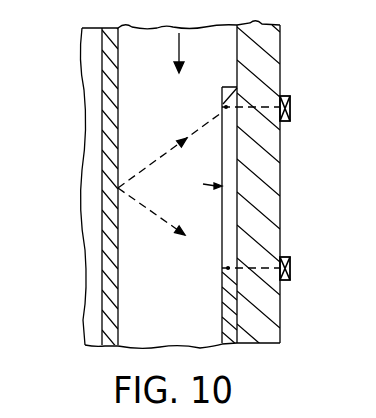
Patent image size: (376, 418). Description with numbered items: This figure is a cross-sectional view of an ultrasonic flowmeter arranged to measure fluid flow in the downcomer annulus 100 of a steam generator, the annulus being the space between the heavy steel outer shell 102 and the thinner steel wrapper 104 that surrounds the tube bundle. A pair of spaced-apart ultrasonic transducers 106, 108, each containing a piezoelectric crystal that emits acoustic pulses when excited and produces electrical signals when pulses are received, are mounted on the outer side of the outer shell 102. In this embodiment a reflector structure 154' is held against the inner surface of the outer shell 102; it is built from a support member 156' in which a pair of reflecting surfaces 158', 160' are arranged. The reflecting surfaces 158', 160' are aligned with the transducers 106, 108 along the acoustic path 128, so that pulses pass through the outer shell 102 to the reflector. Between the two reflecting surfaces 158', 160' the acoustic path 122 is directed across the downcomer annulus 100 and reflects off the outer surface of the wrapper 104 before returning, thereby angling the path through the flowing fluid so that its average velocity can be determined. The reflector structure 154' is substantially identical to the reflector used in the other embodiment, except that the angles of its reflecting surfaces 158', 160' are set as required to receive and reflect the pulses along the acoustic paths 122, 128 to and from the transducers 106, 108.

The downcomer annulus 100 is at (135, 51).
The outer shell 102 is at (268, 182).
The wrapper 104 is at (110, 247).
The ultrasonic transducer 106 is at (290, 100).
The ultrasonic transducer 108 is at (291, 267).
The acoustic path 122 is at (225, 268).
The acoustic path 128 is at (251, 107).
The reflector structure 154' is at (197, 183).
The support member 156' is at (273, 308).
The reflecting surface 158' is at (273, 239).
The reflecting surface 160' is at (202, 100).